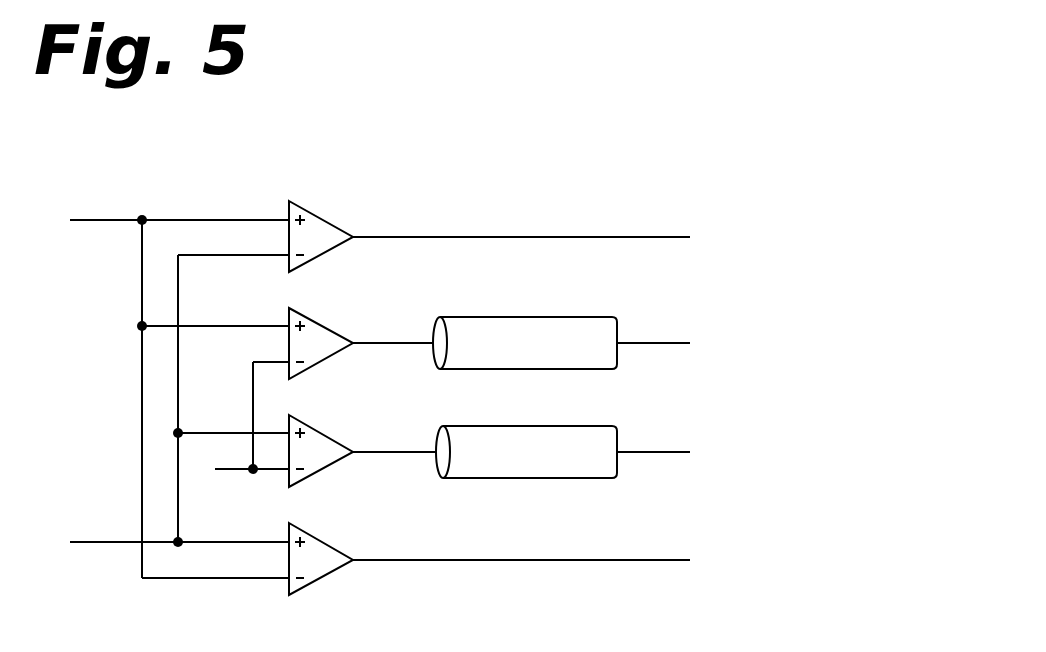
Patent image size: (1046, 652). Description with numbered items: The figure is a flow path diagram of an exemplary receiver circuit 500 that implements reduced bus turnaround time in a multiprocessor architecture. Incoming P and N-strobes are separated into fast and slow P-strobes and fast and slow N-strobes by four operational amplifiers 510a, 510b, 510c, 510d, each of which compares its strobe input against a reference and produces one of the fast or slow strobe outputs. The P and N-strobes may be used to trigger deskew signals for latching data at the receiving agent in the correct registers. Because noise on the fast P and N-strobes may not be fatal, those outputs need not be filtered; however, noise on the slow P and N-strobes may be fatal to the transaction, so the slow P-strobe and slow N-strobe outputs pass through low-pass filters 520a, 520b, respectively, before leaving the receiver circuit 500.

The comparator circuit 500 is at (602, 149).
The operational amplifier 510a is at (323, 218).
The operational amplifier 510b is at (323, 325).
The operational amplifier 510c is at (323, 432).
The operational amplifier 510d is at (323, 540).
The low-pass filter 520a is at (552, 354).
The low-pass filter 520b is at (553, 460).